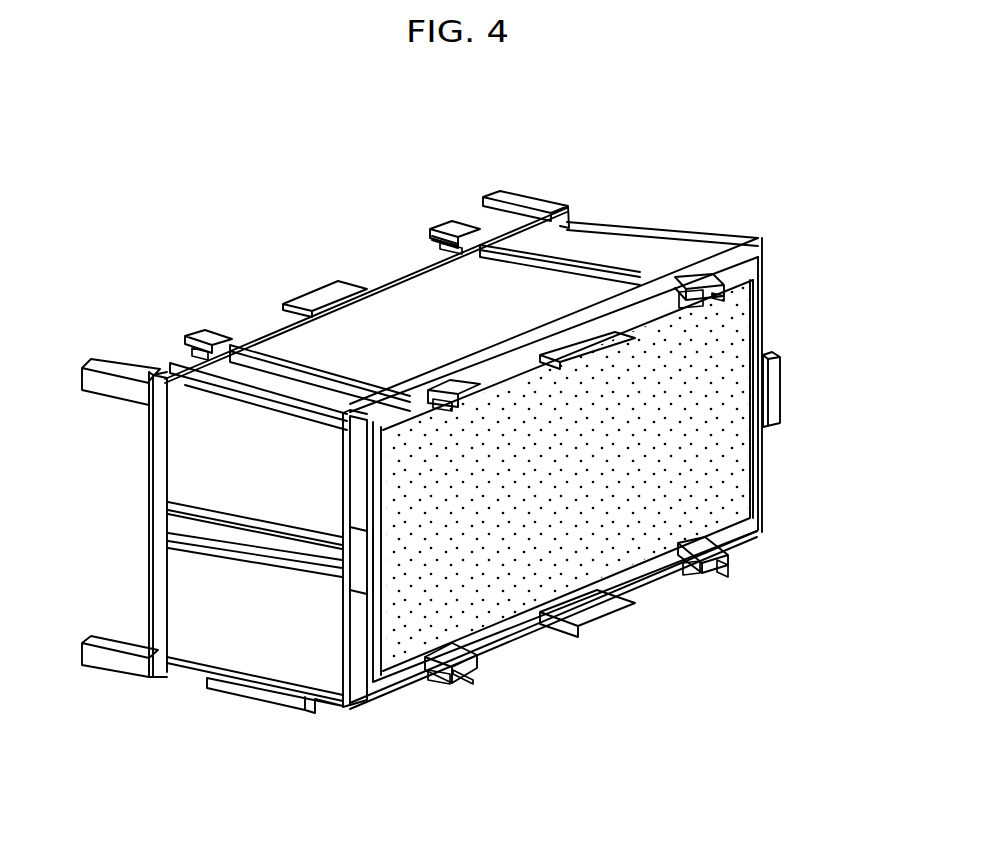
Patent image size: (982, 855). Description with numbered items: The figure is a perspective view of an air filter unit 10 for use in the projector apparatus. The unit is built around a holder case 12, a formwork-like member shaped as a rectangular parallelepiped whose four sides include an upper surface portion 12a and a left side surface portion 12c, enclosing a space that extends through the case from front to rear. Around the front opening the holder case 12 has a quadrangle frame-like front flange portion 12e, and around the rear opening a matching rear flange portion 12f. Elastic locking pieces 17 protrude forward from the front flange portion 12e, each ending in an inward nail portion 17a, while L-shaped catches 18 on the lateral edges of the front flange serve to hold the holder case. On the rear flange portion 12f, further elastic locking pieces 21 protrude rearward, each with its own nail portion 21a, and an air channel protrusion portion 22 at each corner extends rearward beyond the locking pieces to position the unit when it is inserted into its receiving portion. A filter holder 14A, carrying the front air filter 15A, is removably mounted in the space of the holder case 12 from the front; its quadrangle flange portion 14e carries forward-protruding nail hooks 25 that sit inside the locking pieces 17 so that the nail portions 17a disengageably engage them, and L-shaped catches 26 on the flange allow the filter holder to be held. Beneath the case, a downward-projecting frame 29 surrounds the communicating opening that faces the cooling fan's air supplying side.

The air filter unit 10 is at (318, 233).
The holder case 12 is at (770, 228).
The upper surface portion 12a is at (552, 277).
The left side surface portion 12c is at (177, 587).
The front flange portion 12e is at (362, 702).
The rear flange portion 12f is at (148, 447).
The filter holder 14A is at (778, 457).
The flange portion 14e is at (760, 487).
The front air filter 15A is at (730, 510).
The locking piece 17 is at (705, 275).
The nail portion 17a is at (712, 295).
The catch 18 is at (773, 390).
The locking piece 21 is at (203, 337).
The nail portion 21a is at (430, 243).
The air channel protrusion portion 22 is at (107, 392).
The nail hook 25 is at (188, 357).
The catch 26 is at (305, 293).
The frame 29 is at (257, 695).